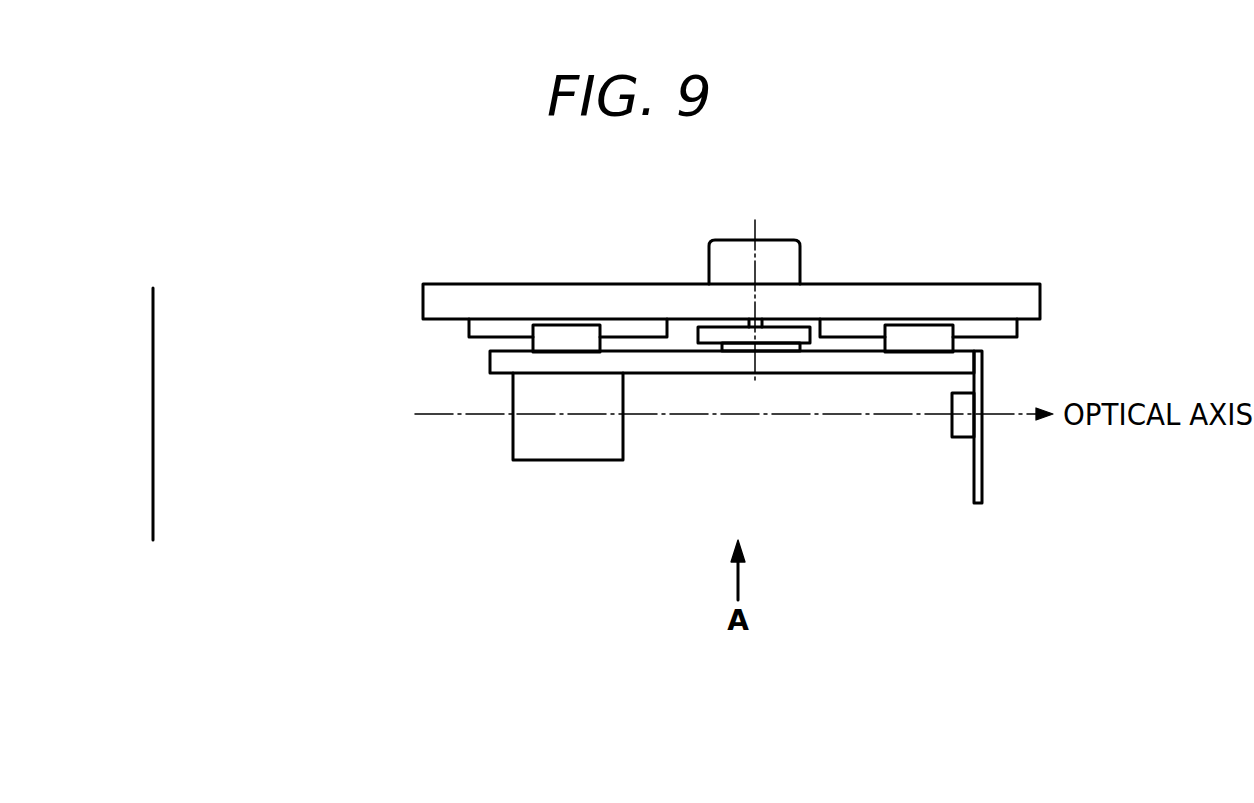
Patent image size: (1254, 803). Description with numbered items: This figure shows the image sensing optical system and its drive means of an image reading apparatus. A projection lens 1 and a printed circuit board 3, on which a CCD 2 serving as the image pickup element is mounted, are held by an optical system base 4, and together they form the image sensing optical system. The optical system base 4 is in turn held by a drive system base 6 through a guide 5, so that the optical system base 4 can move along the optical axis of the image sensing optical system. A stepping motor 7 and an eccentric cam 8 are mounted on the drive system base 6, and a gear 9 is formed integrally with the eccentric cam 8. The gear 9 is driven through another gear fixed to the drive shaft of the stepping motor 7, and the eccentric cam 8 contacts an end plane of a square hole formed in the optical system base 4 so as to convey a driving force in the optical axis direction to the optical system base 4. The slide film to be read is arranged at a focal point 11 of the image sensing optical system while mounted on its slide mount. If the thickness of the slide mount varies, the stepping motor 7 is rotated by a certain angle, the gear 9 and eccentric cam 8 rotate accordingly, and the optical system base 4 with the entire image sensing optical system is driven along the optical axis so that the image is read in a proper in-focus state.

The projection lens 1 is at (535, 443).
The CCD 2 is at (962, 425).
The printed circuit board 3 is at (982, 475).
The optical system base 4 is at (861, 362).
The guide 5 is at (547, 337).
The drive system base 6 is at (450, 302).
The stepping motor 7 is at (782, 253).
The eccentric cam 8 is at (735, 351).
The gear 9 is at (710, 335).
The focal point 11 is at (168, 500).